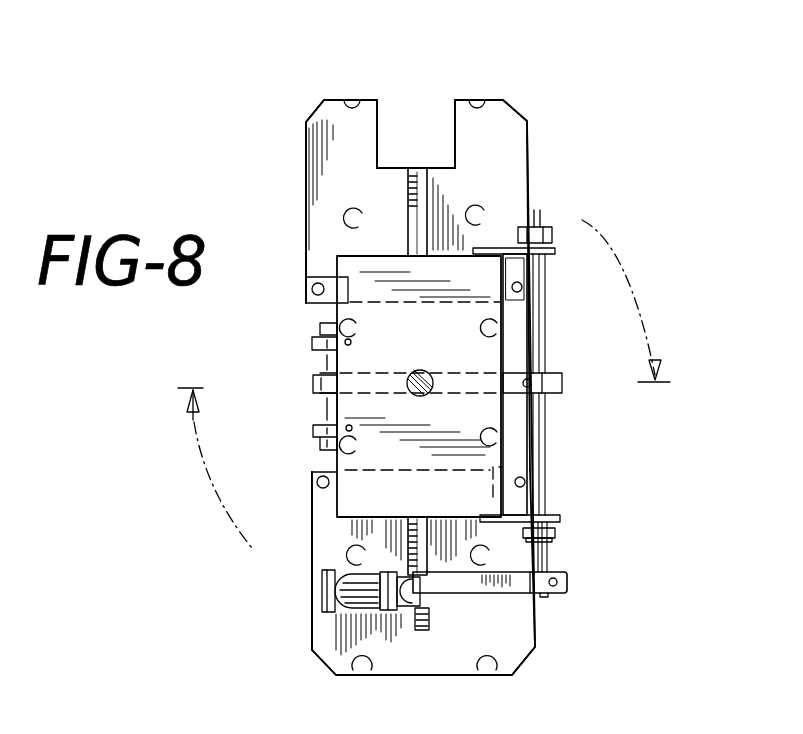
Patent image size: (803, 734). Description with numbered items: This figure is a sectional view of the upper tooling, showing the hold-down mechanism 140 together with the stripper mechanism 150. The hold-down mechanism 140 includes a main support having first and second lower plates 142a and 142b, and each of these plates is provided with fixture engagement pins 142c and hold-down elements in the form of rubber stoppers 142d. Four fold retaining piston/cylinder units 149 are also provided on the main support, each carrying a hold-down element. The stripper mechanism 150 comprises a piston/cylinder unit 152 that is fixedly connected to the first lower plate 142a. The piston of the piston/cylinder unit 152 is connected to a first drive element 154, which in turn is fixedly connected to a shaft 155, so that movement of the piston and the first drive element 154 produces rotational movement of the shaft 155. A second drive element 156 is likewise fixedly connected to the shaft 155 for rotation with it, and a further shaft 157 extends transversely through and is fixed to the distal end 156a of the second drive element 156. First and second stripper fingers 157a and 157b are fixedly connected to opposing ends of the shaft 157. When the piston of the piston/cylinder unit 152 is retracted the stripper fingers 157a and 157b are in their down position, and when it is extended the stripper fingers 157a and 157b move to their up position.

The hold-down mechanism 140 is at (547, 127).
The first lower plate 142a is at (502, 638).
The second lower plate 142b is at (503, 100).
The fixture engagement pins 142c is at (314, 286).
The rubber stoppers 142d is at (357, 212).
The fold retaining piston/cylinder units 149 is at (340, 322).
The stripper mechanism 150 is at (563, 607).
The piston/cylinder unit 152 is at (322, 590).
The first drive element 154 is at (532, 583).
The shaft 155 is at (563, 503).
The second drive element 156 is at (510, 375).
The distal end 156a is at (318, 388).
The shaft 157 is at (315, 346).
The first stripper finger 157a is at (350, 426).
The second stripper finger 157b is at (350, 342).